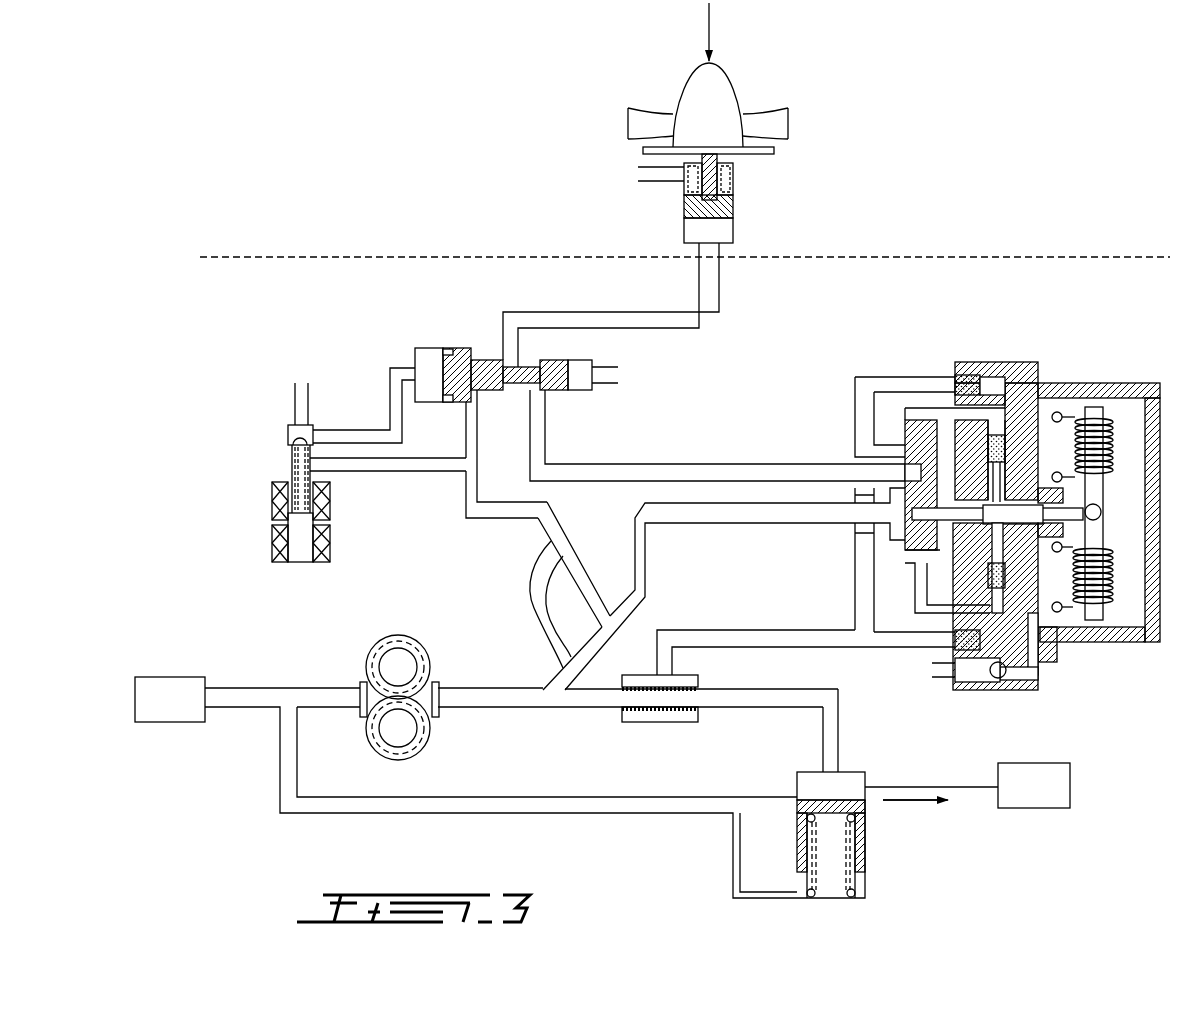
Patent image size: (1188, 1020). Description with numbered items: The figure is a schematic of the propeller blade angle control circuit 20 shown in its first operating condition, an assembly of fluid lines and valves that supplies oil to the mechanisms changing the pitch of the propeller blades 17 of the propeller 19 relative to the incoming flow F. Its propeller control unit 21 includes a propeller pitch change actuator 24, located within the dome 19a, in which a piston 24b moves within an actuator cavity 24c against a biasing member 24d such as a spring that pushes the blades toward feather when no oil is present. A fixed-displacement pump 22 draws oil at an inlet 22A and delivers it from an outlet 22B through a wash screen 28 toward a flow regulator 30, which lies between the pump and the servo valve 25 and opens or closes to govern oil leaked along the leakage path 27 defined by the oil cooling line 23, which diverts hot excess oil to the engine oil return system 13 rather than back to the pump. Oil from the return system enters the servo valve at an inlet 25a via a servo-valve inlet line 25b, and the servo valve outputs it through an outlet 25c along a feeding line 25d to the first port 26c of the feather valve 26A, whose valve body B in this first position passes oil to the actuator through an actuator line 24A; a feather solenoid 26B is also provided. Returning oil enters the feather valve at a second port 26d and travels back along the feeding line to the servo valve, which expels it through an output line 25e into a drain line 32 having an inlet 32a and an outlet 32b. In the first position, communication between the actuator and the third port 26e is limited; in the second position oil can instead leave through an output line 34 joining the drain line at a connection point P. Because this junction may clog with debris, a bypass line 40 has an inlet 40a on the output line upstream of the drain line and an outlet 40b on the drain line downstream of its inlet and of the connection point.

The control circuit 20 is at (279, 284).
The incoming flow F is at (710, 25).
The propeller 19 is at (756, 105).
The dome 19a is at (735, 78).
The propeller blades 17 is at (640, 122).
The propeller pitch change actuator 24 is at (732, 196).
The biasing member 24d is at (735, 183).
The piston 24b is at (690, 211).
The actuator cavity 24c is at (707, 233).
The actuator line 24A is at (680, 330).
The propeller control unit 21 is at (801, 369).
The second port 26d is at (492, 334).
The feather valve 26A is at (466, 347).
The valve body B is at (443, 368).
The first port 26c is at (556, 398).
The third port 26e is at (457, 410).
The feather solenoid 26B is at (338, 529).
The output line 34 is at (507, 501).
The inlet of the bypass line 40a is at (573, 531).
The bypass line 40 is at (536, 563).
The outlet of the bypass line 40b is at (553, 676).
The drain line 32 is at (584, 665).
The inlet of the drain line 32a is at (590, 621).
The outlet of the drain line 32b is at (531, 680).
The connection point P is at (617, 588).
The output line 25e is at (703, 524).
The feeding line 25d is at (650, 463).
The inlet 22A is at (339, 684).
The fixed-displacement pump 22 is at (380, 643).
The outlet 22B is at (456, 688).
The wash screen 28 is at (660, 723).
The servo-valve inlet line 25b is at (773, 629).
The oil cooling line 23 is at (835, 725).
The leakage path 27 is at (910, 800).
The flow regulator 30 is at (875, 863).
The engine oil return system 13 is at (602, 742).
The servo valve 25 is at (999, 451).
The inlet 25a is at (941, 368).
The outlet 25c is at (840, 445).